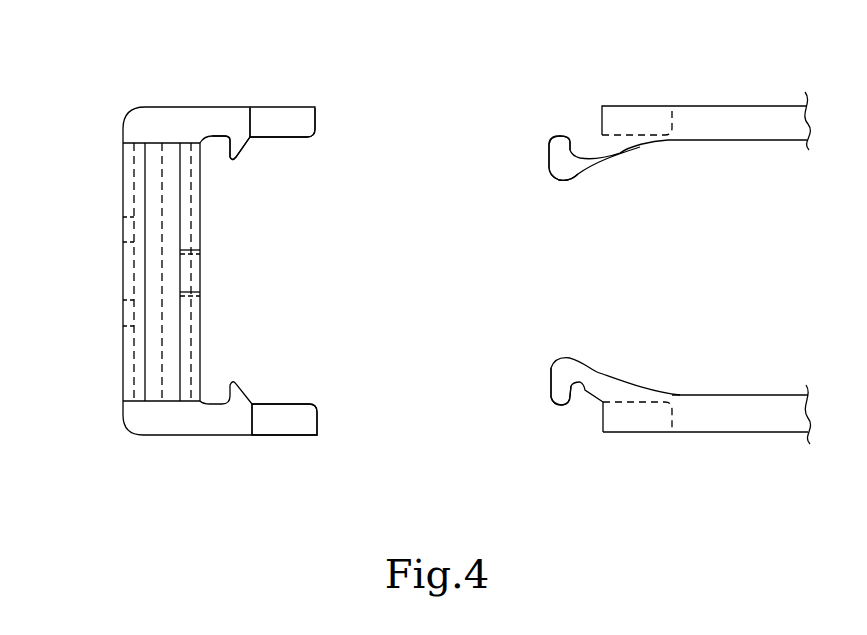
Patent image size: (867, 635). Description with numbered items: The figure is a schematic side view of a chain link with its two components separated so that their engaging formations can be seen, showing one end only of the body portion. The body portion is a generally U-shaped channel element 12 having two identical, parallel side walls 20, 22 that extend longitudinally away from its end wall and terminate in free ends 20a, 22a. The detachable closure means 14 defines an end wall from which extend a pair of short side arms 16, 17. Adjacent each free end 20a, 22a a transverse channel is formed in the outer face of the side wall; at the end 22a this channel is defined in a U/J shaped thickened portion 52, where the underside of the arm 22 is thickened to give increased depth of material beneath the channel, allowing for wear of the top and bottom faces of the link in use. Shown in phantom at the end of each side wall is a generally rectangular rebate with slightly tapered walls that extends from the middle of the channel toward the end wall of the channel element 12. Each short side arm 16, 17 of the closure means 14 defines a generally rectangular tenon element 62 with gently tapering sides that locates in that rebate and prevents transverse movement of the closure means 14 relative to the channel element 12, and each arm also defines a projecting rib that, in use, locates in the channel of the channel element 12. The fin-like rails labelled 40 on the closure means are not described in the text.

The U-shaped channel element 12 is at (780, 423).
The detachable closure means 14 is at (165, 425).
The short side arm 16 is at (200, 118).
The short side arm 17 is at (227, 425).
The side wall 20 is at (722, 423).
The free end of side wall 20a is at (544, 384).
The side wall 22 is at (752, 117).
The free end of side wall 22a is at (541, 154).
The heat radiating fins 40 is at (157, 338).
The thickened portion 52 is at (560, 181).
The tenon element 62 is at (285, 132).